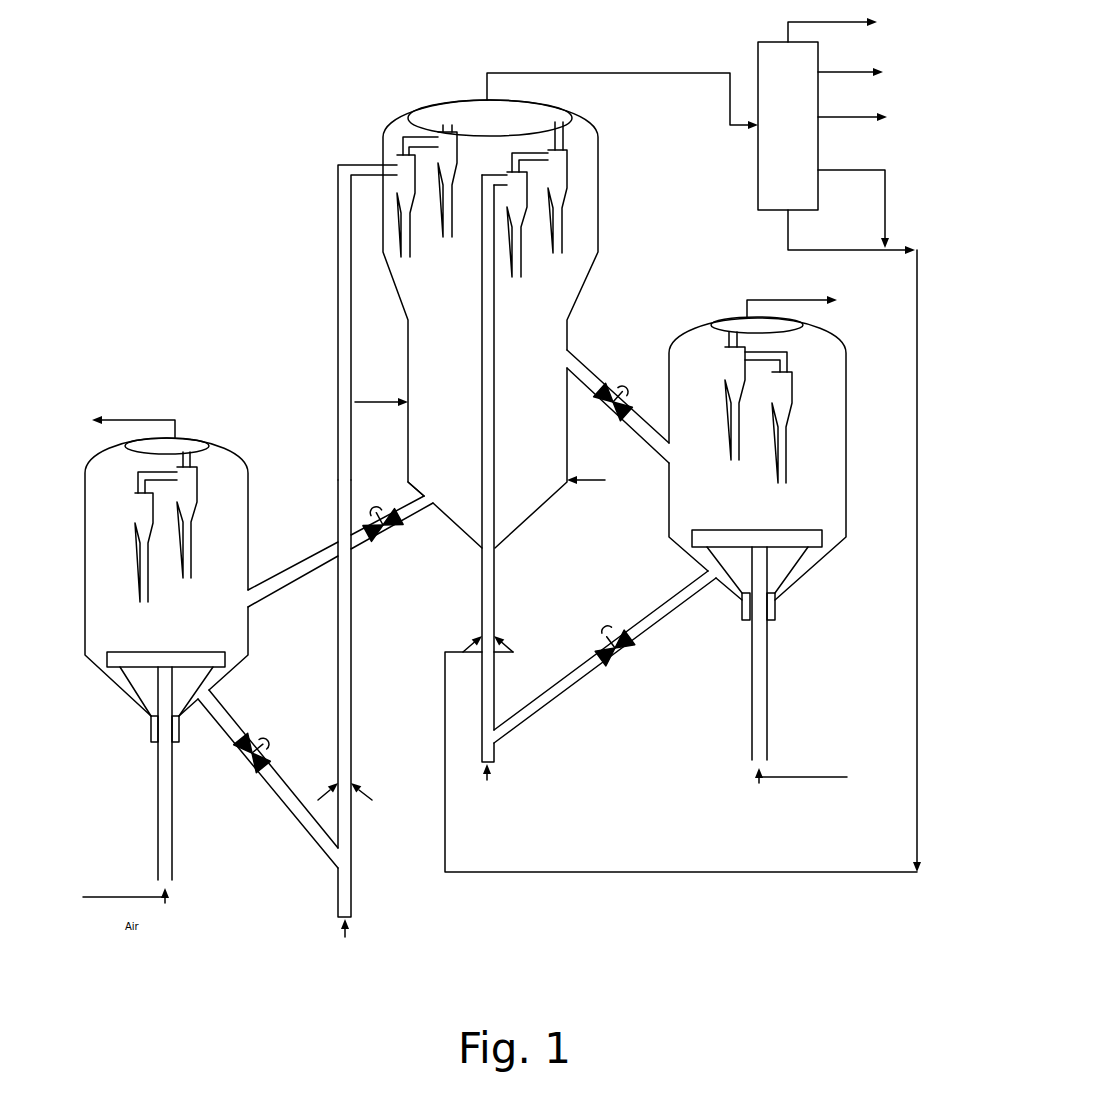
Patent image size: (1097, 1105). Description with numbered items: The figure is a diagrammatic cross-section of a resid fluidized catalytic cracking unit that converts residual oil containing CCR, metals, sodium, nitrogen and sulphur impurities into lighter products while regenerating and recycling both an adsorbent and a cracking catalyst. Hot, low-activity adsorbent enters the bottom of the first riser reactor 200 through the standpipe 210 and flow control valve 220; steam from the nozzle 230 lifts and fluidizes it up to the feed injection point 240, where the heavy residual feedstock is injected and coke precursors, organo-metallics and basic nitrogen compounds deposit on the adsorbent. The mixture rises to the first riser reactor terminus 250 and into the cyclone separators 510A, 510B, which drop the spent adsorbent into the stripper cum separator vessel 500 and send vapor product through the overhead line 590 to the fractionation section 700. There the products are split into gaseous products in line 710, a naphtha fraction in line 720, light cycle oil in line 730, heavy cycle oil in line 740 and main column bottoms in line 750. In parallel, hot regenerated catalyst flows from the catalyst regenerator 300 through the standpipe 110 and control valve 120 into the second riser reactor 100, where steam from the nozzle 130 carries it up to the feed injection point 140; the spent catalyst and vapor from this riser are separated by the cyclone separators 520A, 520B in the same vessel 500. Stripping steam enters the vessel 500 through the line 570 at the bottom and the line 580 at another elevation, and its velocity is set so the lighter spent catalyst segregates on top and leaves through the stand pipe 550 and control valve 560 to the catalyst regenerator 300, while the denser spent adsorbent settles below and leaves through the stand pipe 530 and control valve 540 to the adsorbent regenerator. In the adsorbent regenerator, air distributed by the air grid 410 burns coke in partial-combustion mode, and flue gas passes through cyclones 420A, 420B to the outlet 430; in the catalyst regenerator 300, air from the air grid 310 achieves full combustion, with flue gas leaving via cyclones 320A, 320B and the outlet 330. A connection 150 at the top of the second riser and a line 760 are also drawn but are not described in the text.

The second riser reactor 100 is at (470, 468).
The standpipe 110 is at (605, 657).
The control valve 120 is at (623, 652).
The nozzle 130 is at (486, 786).
The feed injection point 140 is at (490, 632).
The riser outlet to cyclones 150 is at (486, 176).
The first riser reactor 200 is at (364, 698).
The standpipe 210 is at (268, 779).
The flow control valve 220 is at (240, 756).
The nozzle 230 is at (328, 933).
The feed injection point 240 is at (340, 784).
The first riser reactor terminus 250 is at (357, 166).
The catalyst regenerator 300 is at (776, 557).
The air grid 310 is at (707, 532).
The cyclone 320A is at (787, 386).
The cyclone 320B is at (727, 364).
The outlet 330 is at (792, 300).
The air grid 410 is at (166, 647).
The cyclone 420A is at (137, 508).
The cyclone 420B is at (215, 469).
The outlet 430 is at (133, 418).
The stripper cum separator vessel 500 is at (513, 324).
The cyclone separator 510A is at (392, 150).
The cyclone separator 510B is at (468, 174).
The cyclone separator 520A is at (499, 172).
The cyclone separator 520B is at (581, 140).
The stand pipe 530 is at (413, 502).
The control valve 540 is at (340, 551).
The stand pipe 550 is at (583, 372).
The control valve 560 is at (612, 410).
The line 570 is at (591, 492).
The line 580 is at (381, 391).
The overhead line 590 is at (622, 89).
The fractionation section 700 is at (788, 126).
The line 710 is at (858, 26).
The line 720 is at (869, 70).
The line 730 is at (852, 108).
The line 740 is at (853, 198).
The line 750 is at (851, 232).
The recycle gas line 760 is at (683, 561).